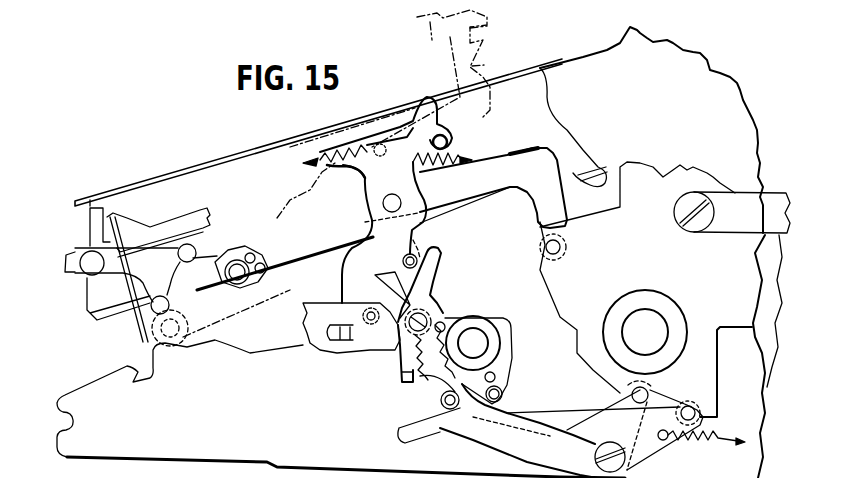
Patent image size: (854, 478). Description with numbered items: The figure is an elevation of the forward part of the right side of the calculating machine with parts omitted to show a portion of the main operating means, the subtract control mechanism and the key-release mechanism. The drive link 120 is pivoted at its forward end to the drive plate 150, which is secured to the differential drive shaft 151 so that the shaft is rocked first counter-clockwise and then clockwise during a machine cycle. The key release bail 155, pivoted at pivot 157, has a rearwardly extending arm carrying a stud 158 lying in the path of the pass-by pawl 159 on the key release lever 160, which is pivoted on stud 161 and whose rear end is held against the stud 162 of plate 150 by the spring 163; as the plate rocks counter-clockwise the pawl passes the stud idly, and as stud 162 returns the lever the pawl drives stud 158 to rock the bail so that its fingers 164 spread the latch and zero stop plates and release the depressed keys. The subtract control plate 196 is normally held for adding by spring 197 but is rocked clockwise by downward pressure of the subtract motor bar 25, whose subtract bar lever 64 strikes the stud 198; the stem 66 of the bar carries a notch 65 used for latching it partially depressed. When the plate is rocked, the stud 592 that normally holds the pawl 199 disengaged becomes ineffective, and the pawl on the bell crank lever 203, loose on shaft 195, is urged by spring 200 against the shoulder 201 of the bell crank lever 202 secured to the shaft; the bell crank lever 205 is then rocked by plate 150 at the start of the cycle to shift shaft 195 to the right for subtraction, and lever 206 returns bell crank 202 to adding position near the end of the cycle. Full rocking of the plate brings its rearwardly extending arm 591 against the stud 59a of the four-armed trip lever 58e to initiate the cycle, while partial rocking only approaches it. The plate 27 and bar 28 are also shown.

The subtract motor bar 25 is at (420, 29).
The depending stem 66 is at (483, 43).
The notch 65 is at (480, 68).
The subtract bar lever 64 is at (290, 140).
The carriage plate 27 is at (163, 225).
The fingers 164 is at (96, 240).
The key release bail 155 is at (64, 257).
The pivot 157 is at (85, 268).
The bar 28 is at (87, 305).
The stud 158 is at (194, 250).
The pass-by pawl 159 is at (208, 300).
The four-armed lever 58e is at (320, 325).
The key release lever 160 is at (333, 243).
The stud 161 is at (398, 201).
The subtract control plate 196 is at (364, 188).
The spring 197 is at (358, 145).
The stud 198 is at (449, 143).
The spring 163 is at (480, 158).
The stud 592 is at (418, 252).
The rearwardly extending arm 591 is at (392, 258).
The stud 59a is at (373, 307).
The pawl 199 is at (427, 278).
The bell crank lever 203 is at (440, 320).
The spring 200 is at (413, 375).
The shoulder 201 is at (430, 378).
The bell crank lever 202 is at (443, 382).
The shaft 195 is at (477, 343).
The bell crank lever 205 is at (433, 428).
The lever 206 is at (543, 420).
The drive plate 150 is at (565, 286).
The differential drive shaft 151 is at (650, 320).
The stud 162 is at (560, 247).
The drive link 120 is at (740, 197).